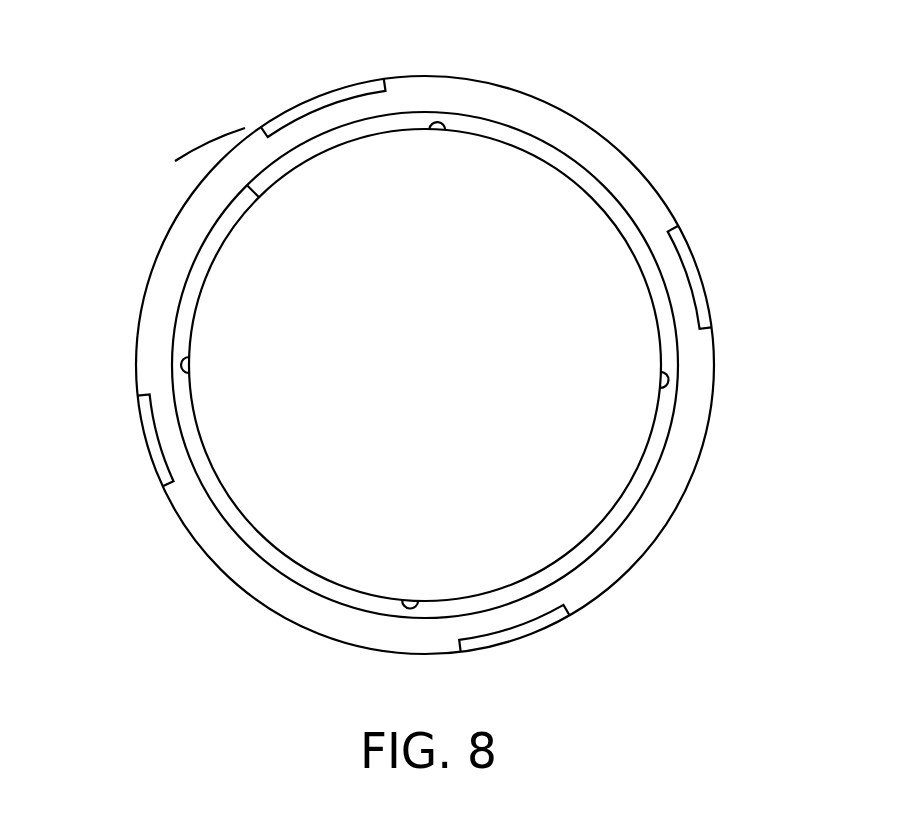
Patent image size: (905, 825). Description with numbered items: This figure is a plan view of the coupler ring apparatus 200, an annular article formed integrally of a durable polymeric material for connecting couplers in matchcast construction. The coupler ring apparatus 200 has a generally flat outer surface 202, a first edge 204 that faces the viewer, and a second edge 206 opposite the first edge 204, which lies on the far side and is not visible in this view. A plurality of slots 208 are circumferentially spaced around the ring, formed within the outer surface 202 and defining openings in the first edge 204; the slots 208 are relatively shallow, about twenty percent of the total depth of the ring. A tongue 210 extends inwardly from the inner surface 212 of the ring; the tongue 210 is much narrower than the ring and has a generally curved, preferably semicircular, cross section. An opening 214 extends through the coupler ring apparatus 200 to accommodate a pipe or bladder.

The coupler ring apparatus 200 is at (717, 136).
The outer surface 202 is at (492, 82).
The first edge 204 is at (198, 200).
The second edge 206 is at (210, 167).
The plurality of slots 208 is at (308, 97).
The tongue 210 is at (517, 150).
The inner surface 212 is at (257, 193).
The opening 214 is at (433, 374).